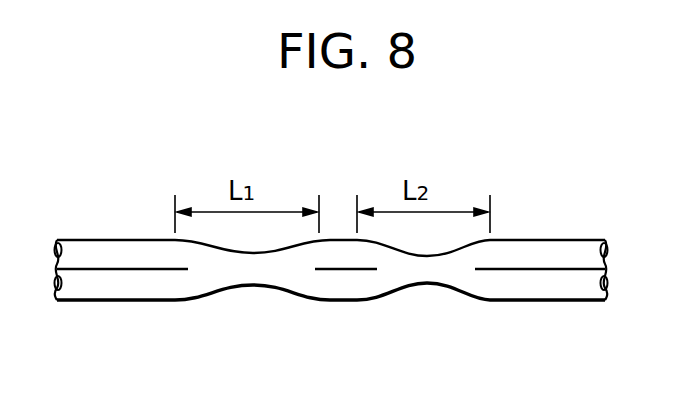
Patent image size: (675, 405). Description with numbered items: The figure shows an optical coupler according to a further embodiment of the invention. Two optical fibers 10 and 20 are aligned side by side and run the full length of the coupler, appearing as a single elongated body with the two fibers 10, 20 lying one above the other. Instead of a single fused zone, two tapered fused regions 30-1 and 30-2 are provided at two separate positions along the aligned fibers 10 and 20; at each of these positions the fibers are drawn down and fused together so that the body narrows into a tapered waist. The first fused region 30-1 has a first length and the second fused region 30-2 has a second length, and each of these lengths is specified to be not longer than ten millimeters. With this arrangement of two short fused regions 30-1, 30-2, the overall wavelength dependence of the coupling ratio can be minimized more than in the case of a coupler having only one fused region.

The optical fiber 10 is at (558, 252).
The optical fiber 20 is at (560, 288).
The tapered fused region 30-1 is at (247, 292).
The tapered fused region 30-2 is at (430, 292).